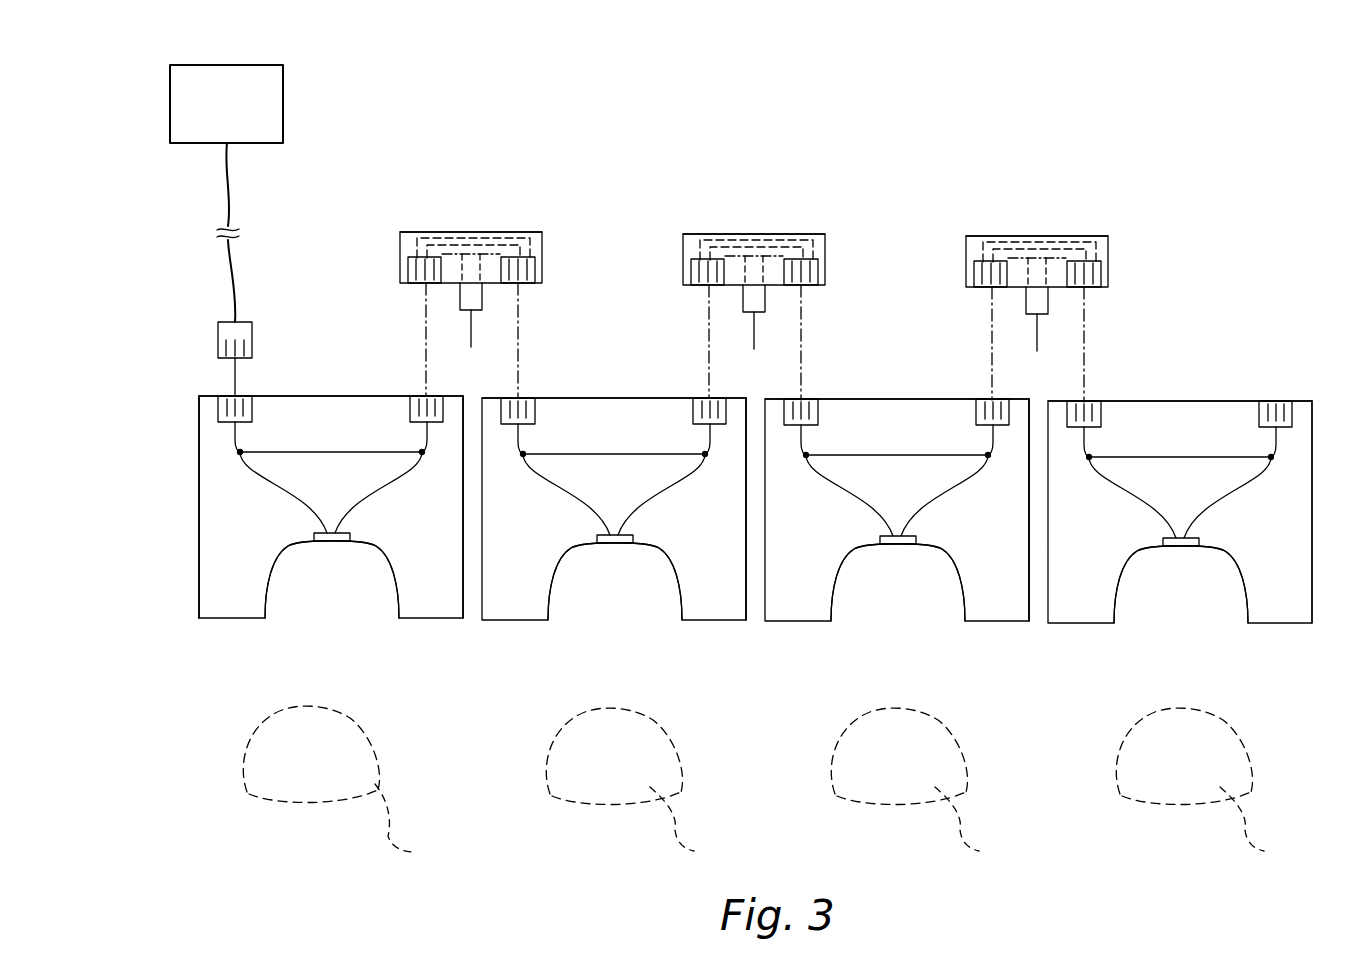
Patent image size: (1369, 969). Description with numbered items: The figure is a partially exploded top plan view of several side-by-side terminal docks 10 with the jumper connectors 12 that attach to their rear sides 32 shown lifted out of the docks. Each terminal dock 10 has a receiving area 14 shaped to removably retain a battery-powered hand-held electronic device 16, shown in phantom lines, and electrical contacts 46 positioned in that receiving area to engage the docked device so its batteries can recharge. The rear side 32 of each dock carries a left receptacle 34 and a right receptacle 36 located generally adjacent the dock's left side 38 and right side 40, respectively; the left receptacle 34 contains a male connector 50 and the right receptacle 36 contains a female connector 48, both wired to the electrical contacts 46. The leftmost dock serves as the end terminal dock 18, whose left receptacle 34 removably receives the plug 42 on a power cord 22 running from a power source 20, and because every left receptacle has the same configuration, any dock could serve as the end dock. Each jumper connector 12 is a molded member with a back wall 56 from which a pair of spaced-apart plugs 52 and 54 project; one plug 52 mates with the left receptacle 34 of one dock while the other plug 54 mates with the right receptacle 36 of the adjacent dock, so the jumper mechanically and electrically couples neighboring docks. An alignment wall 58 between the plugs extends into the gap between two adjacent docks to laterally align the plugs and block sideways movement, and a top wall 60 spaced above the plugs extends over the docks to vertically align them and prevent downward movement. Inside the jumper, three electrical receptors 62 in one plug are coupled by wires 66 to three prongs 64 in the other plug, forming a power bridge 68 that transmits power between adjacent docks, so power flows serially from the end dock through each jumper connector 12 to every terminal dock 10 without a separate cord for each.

The terminal dock 10 is at (430, 612).
The jumper connector 12 is at (538, 213).
The receiving area 14 is at (321, 602).
The hand-held electronic device 16 is at (768, 785).
The end terminal dock 18 is at (215, 558).
The power source 20 is at (283, 98).
The power cord 22 is at (226, 264).
The rear side 32 is at (300, 394).
The left receptacle 34 is at (229, 397).
The right receptacle 36 is at (416, 397).
The left side 38 is at (196, 480).
The right side 40 is at (467, 591).
The plug 42 is at (218, 330).
The electrical contacts 46 is at (340, 541).
The female connector 48 is at (1312, 372).
The male connector 50 is at (240, 408).
The plug 52 is at (522, 286).
The plug 54 is at (415, 286).
The back wall 56 is at (486, 232).
The alignment wall 58 is at (477, 302).
The top wall 60 is at (460, 262).
The electrical receptors 62 is at (535, 270).
The prongs 64 is at (408, 270).
The wires 66 is at (420, 232).
The power bridge 68 is at (541, 243).